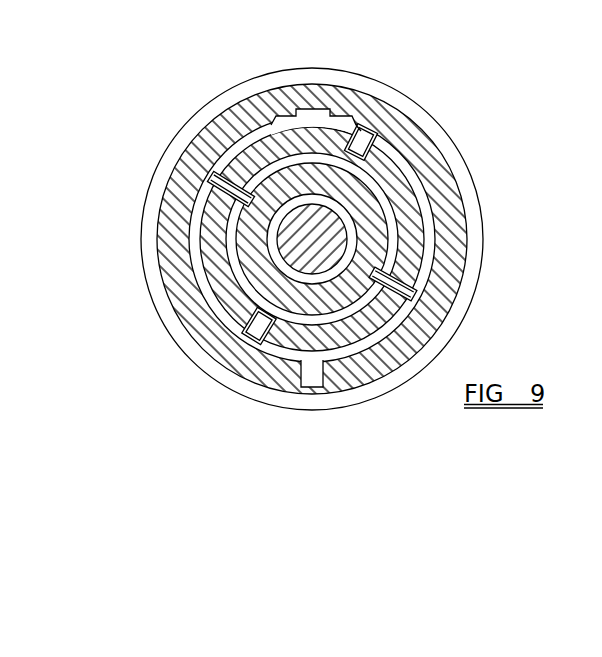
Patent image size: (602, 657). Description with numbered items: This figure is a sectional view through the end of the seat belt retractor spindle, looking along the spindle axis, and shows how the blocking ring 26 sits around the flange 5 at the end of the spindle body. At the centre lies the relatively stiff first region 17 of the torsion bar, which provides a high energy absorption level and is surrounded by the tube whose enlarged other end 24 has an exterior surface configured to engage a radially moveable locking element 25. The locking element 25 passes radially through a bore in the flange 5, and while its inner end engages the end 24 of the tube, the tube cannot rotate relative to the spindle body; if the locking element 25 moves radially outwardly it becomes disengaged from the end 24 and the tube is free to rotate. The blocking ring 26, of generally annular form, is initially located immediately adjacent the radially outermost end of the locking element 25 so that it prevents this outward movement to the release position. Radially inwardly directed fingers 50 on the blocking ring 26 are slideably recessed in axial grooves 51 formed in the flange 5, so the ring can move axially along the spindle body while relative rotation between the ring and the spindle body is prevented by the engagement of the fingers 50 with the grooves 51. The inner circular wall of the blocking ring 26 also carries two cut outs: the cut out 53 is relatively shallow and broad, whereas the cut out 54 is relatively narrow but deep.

The flange 5 is at (293, 145).
The first region of the torsion bar 17 is at (321, 238).
The end of the tube 24 is at (436, 205).
The locking element 25 is at (416, 298).
The blocking ring 26 is at (373, 156).
The fingers 50 is at (400, 193).
The axial grooves 51 is at (348, 138).
The cut out 53 is at (315, 110).
The cut out 54 is at (306, 370).